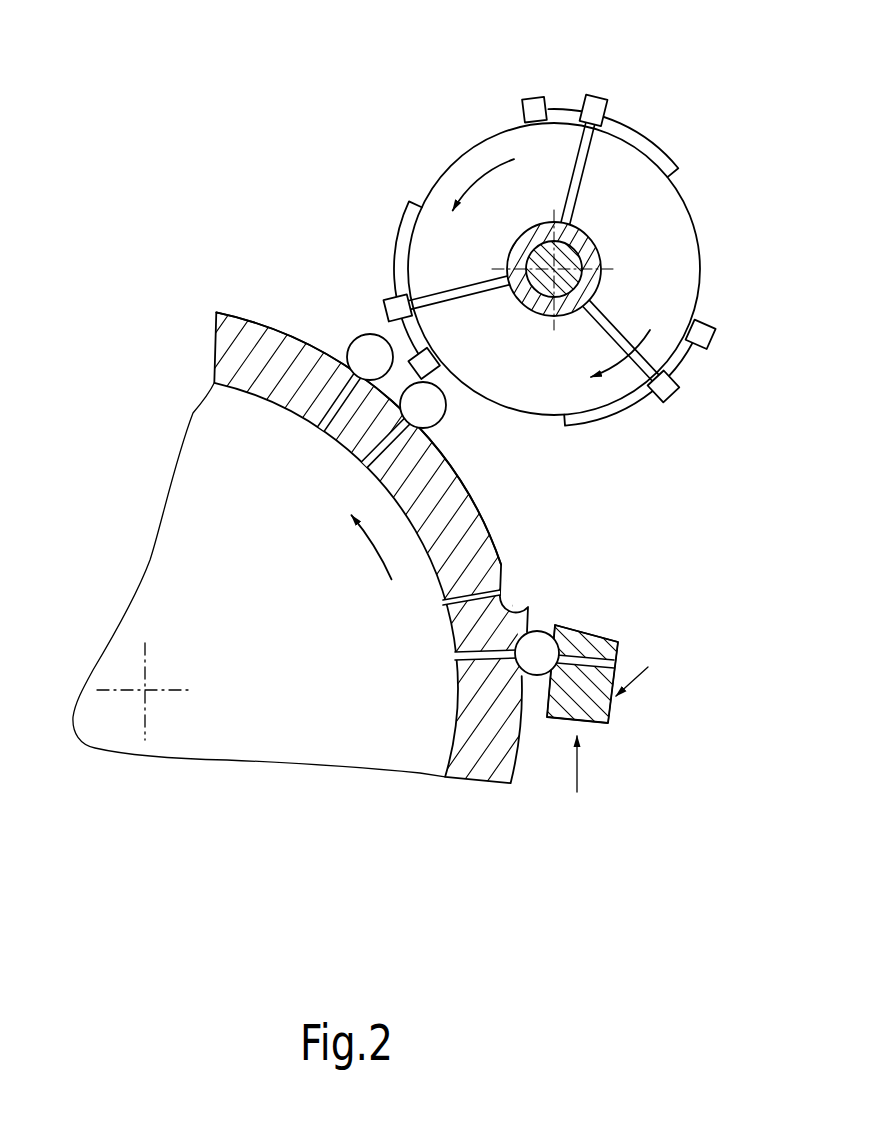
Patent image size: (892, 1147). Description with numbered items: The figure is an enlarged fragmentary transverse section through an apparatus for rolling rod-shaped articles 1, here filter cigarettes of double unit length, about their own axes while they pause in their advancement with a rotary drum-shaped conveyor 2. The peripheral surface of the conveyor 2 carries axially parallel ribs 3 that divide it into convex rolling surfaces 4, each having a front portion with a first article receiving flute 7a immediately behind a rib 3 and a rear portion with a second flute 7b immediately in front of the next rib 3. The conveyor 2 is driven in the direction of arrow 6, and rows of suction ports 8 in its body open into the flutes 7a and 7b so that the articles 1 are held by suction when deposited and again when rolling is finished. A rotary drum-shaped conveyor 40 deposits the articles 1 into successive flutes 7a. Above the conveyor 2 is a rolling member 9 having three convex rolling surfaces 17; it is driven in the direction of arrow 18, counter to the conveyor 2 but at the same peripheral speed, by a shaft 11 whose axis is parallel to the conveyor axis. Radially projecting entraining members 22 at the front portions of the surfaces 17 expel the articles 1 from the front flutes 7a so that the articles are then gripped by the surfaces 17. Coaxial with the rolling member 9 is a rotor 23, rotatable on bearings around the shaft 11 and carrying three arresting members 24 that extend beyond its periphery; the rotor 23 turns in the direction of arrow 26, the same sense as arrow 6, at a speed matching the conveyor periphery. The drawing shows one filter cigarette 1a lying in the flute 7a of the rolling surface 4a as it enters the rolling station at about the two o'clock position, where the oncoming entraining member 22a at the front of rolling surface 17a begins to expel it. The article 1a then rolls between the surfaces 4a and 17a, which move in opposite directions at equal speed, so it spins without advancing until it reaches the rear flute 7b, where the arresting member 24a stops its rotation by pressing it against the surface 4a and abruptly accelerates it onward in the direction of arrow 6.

The rod-shaped article 1 is at (363, 353).
The filter cigarette of double unit length 1a is at (425, 405).
The rotary drum-shaped conveyor 2 is at (358, 752).
The rib 3 is at (530, 620).
The convex rolling surface 4 is at (520, 745).
The rolling surface 4a is at (491, 528).
The arrow 6 is at (375, 547).
The first article receiving flute 7a is at (417, 430).
The second article receiving flute 7b is at (505, 598).
The suction port 8 is at (455, 656).
The rolling member 9 is at (485, 130).
The shaft 11 is at (574, 276).
The convex rolling surface 17 is at (648, 138).
The rolling surface 17a is at (395, 243).
The arrow 18 is at (472, 183).
The entraining member 22 is at (536, 104).
The entraining member 22a is at (430, 362).
The rotor 23 is at (593, 238).
The arresting member 24 is at (600, 105).
The arresting member 24a is at (673, 397).
The arrow 26 is at (616, 366).
The rotary drum-shaped conveyor 40 is at (629, 721).